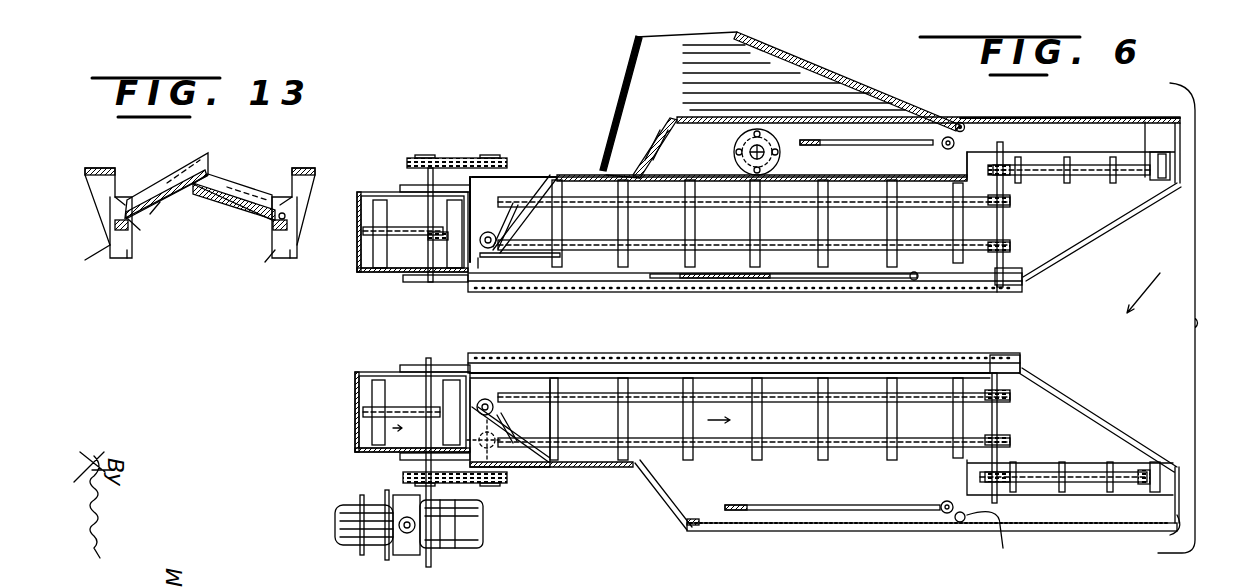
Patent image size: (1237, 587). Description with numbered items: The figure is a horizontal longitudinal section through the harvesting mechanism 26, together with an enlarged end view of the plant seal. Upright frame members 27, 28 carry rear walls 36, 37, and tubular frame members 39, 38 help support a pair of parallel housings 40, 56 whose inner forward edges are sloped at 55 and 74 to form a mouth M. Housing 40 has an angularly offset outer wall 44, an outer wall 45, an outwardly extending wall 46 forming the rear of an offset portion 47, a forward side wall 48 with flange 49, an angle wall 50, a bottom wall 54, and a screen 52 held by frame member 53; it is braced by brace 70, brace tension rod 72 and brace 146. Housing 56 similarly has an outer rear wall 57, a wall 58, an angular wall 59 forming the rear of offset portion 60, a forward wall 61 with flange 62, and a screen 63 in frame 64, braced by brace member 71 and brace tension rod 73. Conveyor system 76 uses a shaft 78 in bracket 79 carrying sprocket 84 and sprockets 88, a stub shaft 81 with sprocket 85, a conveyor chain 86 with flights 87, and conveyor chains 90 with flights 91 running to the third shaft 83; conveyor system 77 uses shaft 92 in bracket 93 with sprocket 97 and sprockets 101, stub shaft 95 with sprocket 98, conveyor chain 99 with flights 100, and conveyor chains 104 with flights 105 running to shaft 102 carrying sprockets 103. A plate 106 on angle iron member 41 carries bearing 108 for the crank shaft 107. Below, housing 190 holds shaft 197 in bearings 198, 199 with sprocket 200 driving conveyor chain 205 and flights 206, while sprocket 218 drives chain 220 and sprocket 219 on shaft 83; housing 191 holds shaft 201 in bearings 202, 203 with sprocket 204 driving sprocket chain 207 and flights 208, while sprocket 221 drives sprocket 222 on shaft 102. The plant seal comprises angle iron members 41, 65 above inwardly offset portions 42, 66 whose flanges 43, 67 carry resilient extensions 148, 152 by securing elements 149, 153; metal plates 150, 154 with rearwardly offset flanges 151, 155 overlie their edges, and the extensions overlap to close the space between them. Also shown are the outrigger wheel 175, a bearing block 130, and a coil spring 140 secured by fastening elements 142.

In FIG. 13, the angle iron member 65 is at (105, 166).
In FIG. 6, the angle iron member 65 is at (1022, 365).
In FIG. 13, the outwardly directed flange 67 is at (128, 233).
In FIG. 6, the outwardly directed flange 67 is at (690, 355).
In FIG. 13, the securing elements 153 is at (100, 242).
In FIG. 13, the inwardly offset portion 66 is at (127, 260).
In FIG. 13, the metal plates 154 is at (170, 190).
In FIG. 13, the rearwardly offset flanges 155 is at (187, 160).
In FIG. 13, the resilient extensions 152 is at (160, 207).
In FIG. 13, the metal plate 150 is at (243, 183).
In FIG. 13, the rearwardly offset flange 151 is at (247, 200).
In FIG. 13, the resilient extensions 148 is at (228, 205).
In FIG. 13, the angle iron member 41 is at (305, 167).
In FIG. 6, the angle iron member 41 is at (1012, 286).
In FIG. 13, the securing elements 149 is at (290, 225).
In FIG. 13, the inwardly offset lower portion 42 is at (268, 252).
In FIG. 13, the outwardly extending flange 43 is at (292, 258).
In FIG. 6, the outwardly extending flange 43 is at (690, 300).
In FIG. 6, the angle wall 50 is at (908, 100).
In FIG. 6, the screen 52 is at (617, 95).
In FIG. 6, the bottom wall 54 is at (822, 82).
In FIG. 6, the offset portion 47 is at (690, 116).
In FIG. 6, the outwardly extending wall 46 is at (680, 122).
In FIG. 6, the frame member 53 is at (656, 140).
In FIG. 6, the shaft 107 is at (735, 148).
In FIG. 6, the bearing 108 is at (737, 162).
In FIG. 6, the brace tension rod 72 is at (840, 146).
In FIG. 6, the upright tubular frame member 39 is at (966, 124).
In FIG. 6, the inwardly directed flange 49 is at (1185, 122).
In FIG. 6, the forward side wall 48 is at (1063, 119).
In FIG. 6, the sprocket 84 is at (1000, 150).
In FIG. 6, the conveyor flights 87 is at (1060, 142).
In FIG. 6, the conveyor chain 86 is at (1082, 178).
In FIG. 6, the stub shaft 81 is at (1157, 152).
In FIG. 6, the sprocket 85 is at (1150, 168).
In FIG. 6, the shaft 78 is at (1004, 222).
In FIG. 6, the sprockets 88 is at (1011, 247).
In FIG. 6, the flights 91 is at (890, 220).
In FIG. 6, the conveyor chains 90 is at (725, 240).
In FIG. 6, the brace 146 is at (825, 280).
In FIG. 6, the plate 106 is at (740, 292).
In FIG. 6, the bracket 79 is at (996, 284).
In FIG. 6, the conveyor system 76 is at (964, 264).
In FIG. 6, the sloped forward inside edge 55 is at (1107, 232).
In FIG. 6, the housing 40 is at (1062, 250).
In FIG. 6, the angularly offset outer wall 44 is at (538, 188).
In FIG. 6, the rear wall 36 is at (500, 180).
In FIG. 6, the brace 70 is at (498, 226).
In FIG. 6, the third shaft 83 is at (502, 258).
In FIG. 6, the outer wall 45 is at (569, 180).
In FIG. 6, the housing 190 is at (365, 275).
In FIG. 6, the conveyor chain 205 is at (398, 195).
In FIG. 6, the sprocket 200 is at (403, 245).
In FIG. 6, the bearing 198 is at (433, 210).
In FIG. 6, the shaft 197 is at (410, 186).
In FIG. 6, the sprocket 218 is at (442, 158).
In FIG. 6, the chain 220 is at (472, 158).
In FIG. 6, the sprocket 219 is at (505, 162).
In FIG. 6, the bearing 199 is at (420, 283).
In FIG. 6, the flights 206 is at (372, 283).
In FIG. 6, the upright frame member 27 is at (460, 268).
In FIG. 6, the bracket 93 is at (1006, 368).
In FIG. 6, the outer rear wall 57 is at (595, 335).
In FIG. 6, the flights 105 is at (953, 420).
In FIG. 6, the conveyor chains 104 is at (795, 402).
In FIG. 6, the conveyor system 77 is at (931, 376).
In FIG. 6, the wall 58 is at (548, 470).
In FIG. 6, the upright frame member 28 is at (490, 398).
In FIG. 6, the brace member 71 is at (498, 445).
In FIG. 6, the shaft 102 is at (480, 355).
In FIG. 6, the sprockets 103 is at (512, 472).
In FIG. 6, the harvesting mechanism 26 is at (620, 476).
In FIG. 6, the angular wall 59 is at (658, 495).
In FIG. 6, the outwardly offset portion 60 is at (715, 512).
In FIG. 6, the screen 63 is at (815, 532).
In FIG. 6, the frame 64 is at (967, 535).
In FIG. 6, the brace tension rod 73 is at (778, 505).
In FIG. 6, the fastening elements 142 is at (908, 575).
In FIG. 6, the bearing block 130 is at (811, 577).
In FIG. 6, the coil spring 140 is at (921, 577).
In FIG. 6, the upright tubular frame member 38 is at (1003, 548).
In FIG. 6, the housing 56 is at (1062, 393).
In FIG. 6, the sprocket 97 is at (978, 476).
In FIG. 6, the flights 100 is at (1110, 462).
In FIG. 6, the conveyor chain 99 is at (1065, 465).
In FIG. 6, the stub shaft 95 is at (1145, 492).
In FIG. 6, the sprocket 98 is at (1137, 470).
In FIG. 6, the sloped inner forward edge 74 is at (1142, 442).
In FIG. 6, the shaft 92 is at (1000, 455).
In FIG. 6, the sprockets 101 is at (1000, 418).
In FIG. 6, the forward wall 61 is at (1070, 531).
In FIG. 6, the inwardly directed flange 62 is at (1176, 522).
In FIG. 6, the mouth M is at (1162, 318).
In FIG. 6, the housing 191 is at (360, 373).
In FIG. 6, the flights 208 is at (365, 402).
In FIG. 6, the sprocket chain 207 is at (360, 418).
In FIG. 6, the bearing 202 is at (425, 366).
In FIG. 6, the shaft 201 is at (420, 382).
In FIG. 6, the sprocket 204 is at (398, 455).
In FIG. 6, the bearing 203 is at (413, 478).
In FIG. 6, the wheel 175 is at (358, 542).
In FIG. 6, the sprocket 221 is at (430, 566).
In FIG. 6, the sprocket 222 is at (468, 487).
In FIG. 6, the rear wall 37 is at (500, 488).